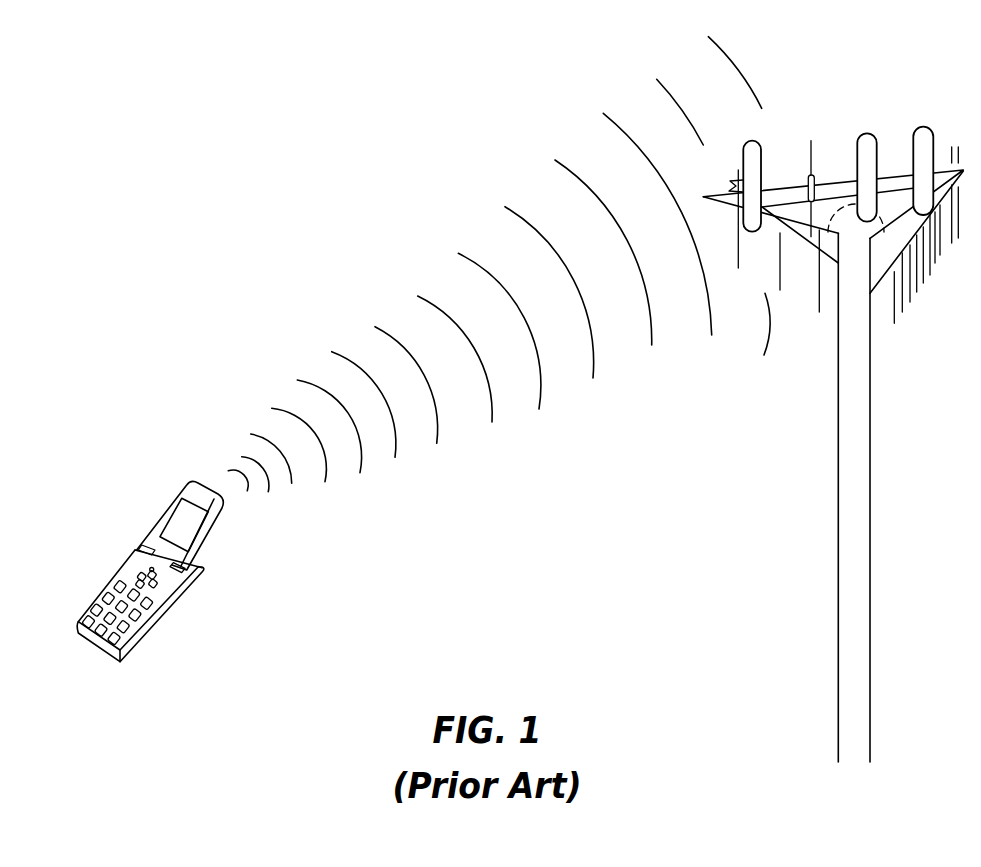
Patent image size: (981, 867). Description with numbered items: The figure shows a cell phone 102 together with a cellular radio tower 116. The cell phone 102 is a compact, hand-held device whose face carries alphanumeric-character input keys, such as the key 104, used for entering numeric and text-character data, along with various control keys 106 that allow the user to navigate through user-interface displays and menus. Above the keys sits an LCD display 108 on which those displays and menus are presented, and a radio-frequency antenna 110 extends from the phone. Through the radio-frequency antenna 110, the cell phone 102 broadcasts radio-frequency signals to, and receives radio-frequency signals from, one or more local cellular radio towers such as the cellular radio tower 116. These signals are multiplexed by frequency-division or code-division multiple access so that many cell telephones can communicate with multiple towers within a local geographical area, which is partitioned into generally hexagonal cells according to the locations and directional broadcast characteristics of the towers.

The cell phone 102 is at (149, 569).
The key 104 is at (88, 617).
The control keys 106 is at (140, 573).
The LCD display 108 is at (183, 527).
The radio-frequency antenna 110 is at (202, 568).
The cellular radio tower 116 is at (870, 464).